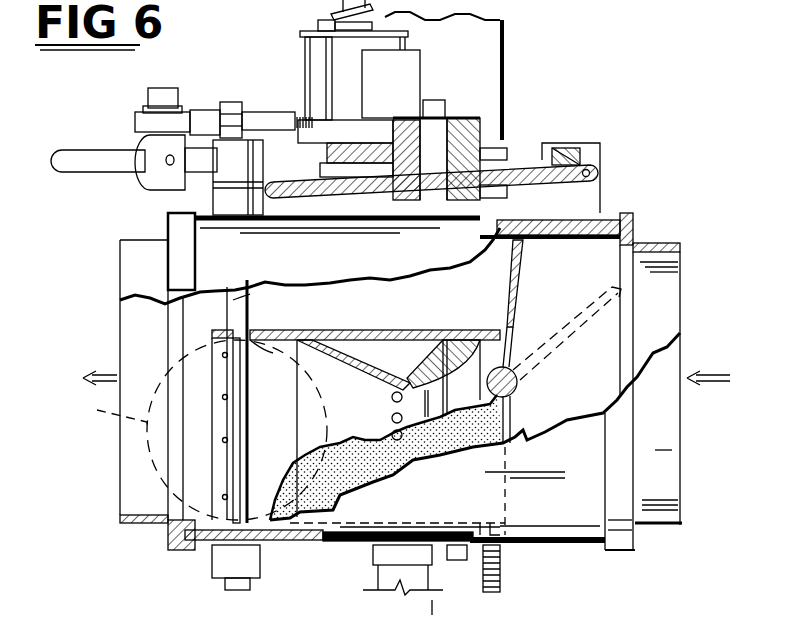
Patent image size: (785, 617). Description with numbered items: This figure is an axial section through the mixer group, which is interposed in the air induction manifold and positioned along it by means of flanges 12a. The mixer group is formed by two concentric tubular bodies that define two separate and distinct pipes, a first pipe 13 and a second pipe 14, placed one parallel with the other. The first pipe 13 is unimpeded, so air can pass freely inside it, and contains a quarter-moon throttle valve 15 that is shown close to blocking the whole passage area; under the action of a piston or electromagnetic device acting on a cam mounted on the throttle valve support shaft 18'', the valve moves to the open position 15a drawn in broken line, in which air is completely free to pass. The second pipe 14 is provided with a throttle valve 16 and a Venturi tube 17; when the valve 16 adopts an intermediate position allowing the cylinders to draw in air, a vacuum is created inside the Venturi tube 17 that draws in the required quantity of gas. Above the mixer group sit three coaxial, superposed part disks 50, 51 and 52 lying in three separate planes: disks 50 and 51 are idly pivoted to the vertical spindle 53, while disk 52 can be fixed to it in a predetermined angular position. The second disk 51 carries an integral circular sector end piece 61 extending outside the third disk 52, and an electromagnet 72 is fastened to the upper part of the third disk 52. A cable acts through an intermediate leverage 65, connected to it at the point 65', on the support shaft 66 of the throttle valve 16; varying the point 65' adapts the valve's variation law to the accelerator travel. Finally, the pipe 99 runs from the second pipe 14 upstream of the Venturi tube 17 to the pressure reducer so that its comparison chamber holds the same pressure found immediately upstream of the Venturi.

The flanges 12a is at (150, 262).
The first pipe 13 is at (378, 309).
The second pipe 14 is at (252, 373).
The throttle valve 15 is at (520, 302).
The open position of throttle valve 15a is at (621, 298).
The throttle valve 16 is at (233, 452).
The Venturi tube 17 is at (403, 393).
The throttle valve support shaft 18'' is at (546, 387).
The first disk 50 is at (430, 173).
The second disk 51 is at (553, 180).
The third disk 52 is at (367, 157).
The vertical spindle 53 is at (478, 148).
The circular sector end piece 61 is at (580, 147).
The intermediate leverage 65 is at (157, 145).
The cable connection point 65' is at (223, 89).
The support shaft 66 is at (233, 300).
The electromagnet 72 is at (343, 60).
The pipe 99 is at (503, 566).